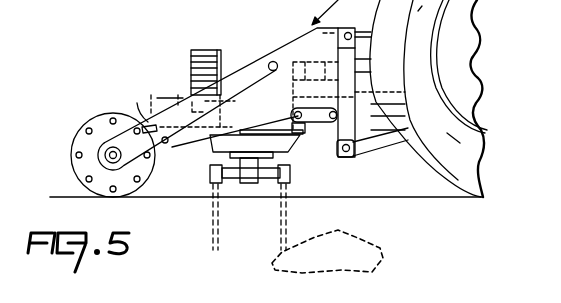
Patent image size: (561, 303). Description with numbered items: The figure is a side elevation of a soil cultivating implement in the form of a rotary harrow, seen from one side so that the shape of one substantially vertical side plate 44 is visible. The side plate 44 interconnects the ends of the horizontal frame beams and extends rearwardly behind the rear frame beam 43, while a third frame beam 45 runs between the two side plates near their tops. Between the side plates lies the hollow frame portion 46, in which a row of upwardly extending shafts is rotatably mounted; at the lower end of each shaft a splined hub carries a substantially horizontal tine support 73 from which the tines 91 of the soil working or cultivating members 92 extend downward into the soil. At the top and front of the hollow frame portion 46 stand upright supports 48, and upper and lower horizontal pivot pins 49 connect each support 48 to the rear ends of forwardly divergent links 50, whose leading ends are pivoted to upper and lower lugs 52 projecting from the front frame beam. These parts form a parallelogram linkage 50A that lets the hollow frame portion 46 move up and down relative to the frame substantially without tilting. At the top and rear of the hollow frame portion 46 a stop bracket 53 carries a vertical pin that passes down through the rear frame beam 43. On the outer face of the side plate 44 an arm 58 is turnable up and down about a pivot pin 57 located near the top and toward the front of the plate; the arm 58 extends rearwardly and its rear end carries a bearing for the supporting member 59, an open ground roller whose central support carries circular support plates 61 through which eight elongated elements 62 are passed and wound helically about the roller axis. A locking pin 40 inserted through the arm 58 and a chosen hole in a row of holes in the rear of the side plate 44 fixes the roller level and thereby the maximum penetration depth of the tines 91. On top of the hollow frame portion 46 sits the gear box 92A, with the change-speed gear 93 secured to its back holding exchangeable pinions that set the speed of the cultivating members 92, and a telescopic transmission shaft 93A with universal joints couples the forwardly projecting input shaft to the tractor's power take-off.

The locking pin 40 is at (146, 124).
The frame beam 43 is at (148, 122).
The side plate 44 is at (304, 12).
The third frame beam 45 is at (381, 89).
The hollow frame portion 46 is at (209, 147).
The upright support 48 is at (300, 92).
The pivot pin 49 is at (292, 113).
The link 50 is at (313, 133).
The parallelogram linkage 50A is at (320, 134).
The lug 52 is at (378, 108).
The stop bracket 53 is at (160, 98).
The pivot pin 57 is at (272, 58).
The arm 58 is at (137, 103).
The supporting member 59 is at (78, 130).
The support plate 61 is at (72, 147).
The elongated element 62 is at (77, 172).
The tine support 73 is at (270, 173).
The tine 91 is at (213, 216).
The soil working or cultivating member 92 is at (258, 246).
The gear box 92A is at (230, 62).
The change-speed gear 93 is at (206, 50).
The telescopic transmission shaft 93A is at (357, 65).